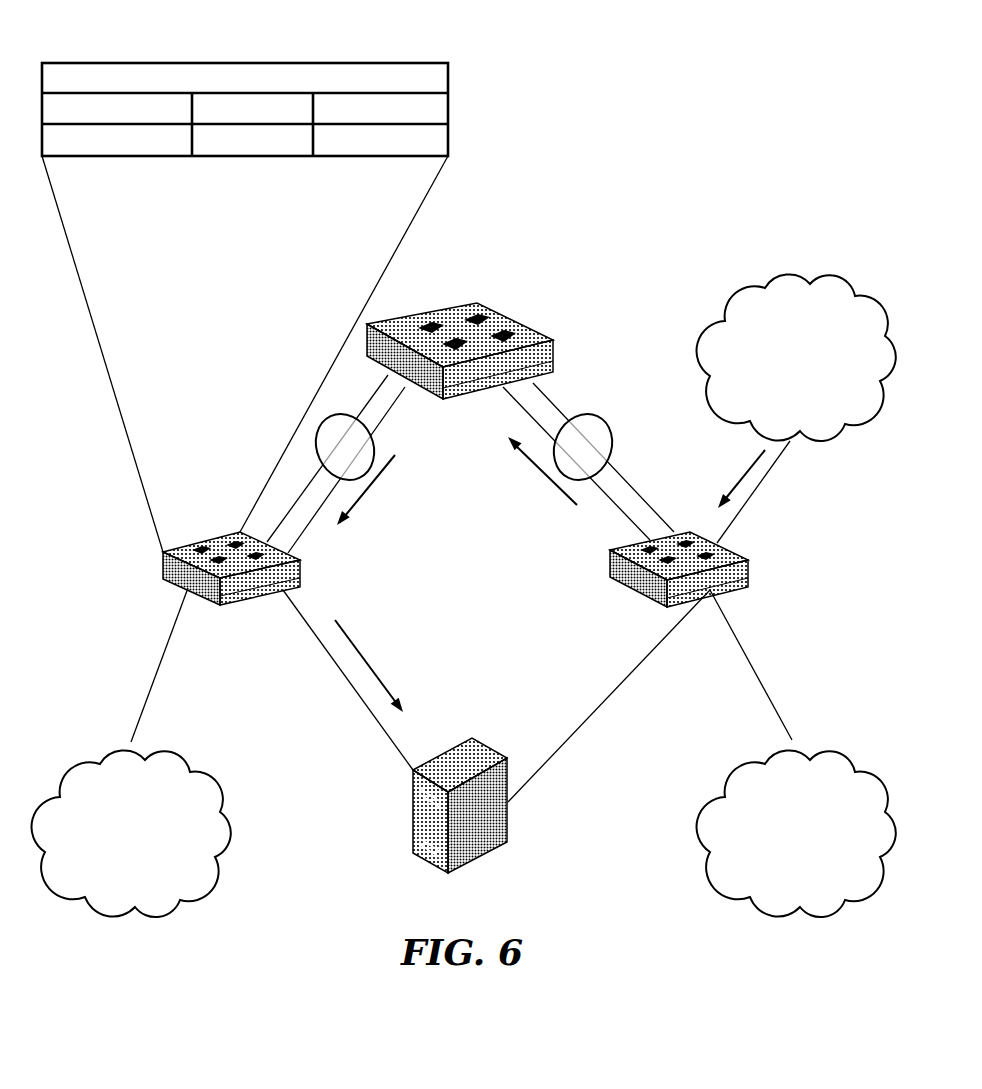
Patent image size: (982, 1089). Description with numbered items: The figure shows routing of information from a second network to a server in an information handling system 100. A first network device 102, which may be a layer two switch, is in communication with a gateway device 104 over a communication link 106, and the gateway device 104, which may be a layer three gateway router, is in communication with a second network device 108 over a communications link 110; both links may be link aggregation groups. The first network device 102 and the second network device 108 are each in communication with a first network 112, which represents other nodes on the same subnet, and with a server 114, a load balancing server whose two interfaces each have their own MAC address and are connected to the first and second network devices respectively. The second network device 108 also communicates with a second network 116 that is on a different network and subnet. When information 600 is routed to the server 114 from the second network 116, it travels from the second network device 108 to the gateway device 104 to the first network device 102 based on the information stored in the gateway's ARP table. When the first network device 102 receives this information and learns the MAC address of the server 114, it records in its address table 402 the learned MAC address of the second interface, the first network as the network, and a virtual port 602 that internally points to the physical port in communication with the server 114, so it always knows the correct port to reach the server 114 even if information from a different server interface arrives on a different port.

The information handling system 100 is at (493, 85).
The address table 402 is at (245, 108).
The virtual port 602 is at (380, 156).
The first network device 102 is at (300, 570).
The gateway device 104 is at (553, 342).
The communication link 106 is at (385, 418).
The second network device 108 is at (610, 572).
The communications link 110 is at (601, 455).
The first network 112 is at (125, 917).
The server 114 is at (487, 850).
The second network 116 is at (690, 375).
The information 600 is at (549, 574).